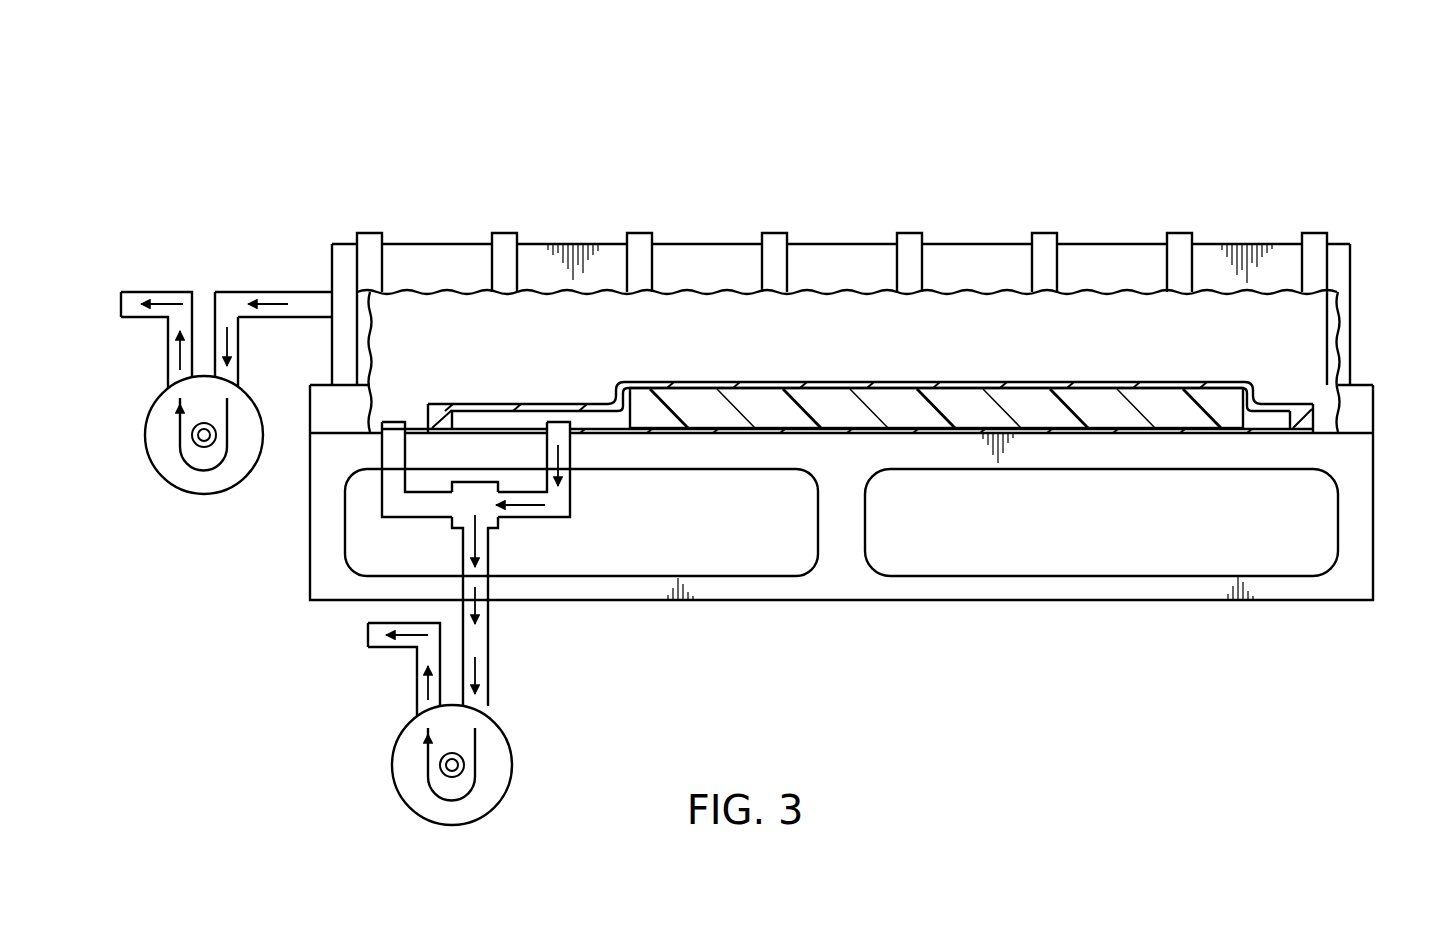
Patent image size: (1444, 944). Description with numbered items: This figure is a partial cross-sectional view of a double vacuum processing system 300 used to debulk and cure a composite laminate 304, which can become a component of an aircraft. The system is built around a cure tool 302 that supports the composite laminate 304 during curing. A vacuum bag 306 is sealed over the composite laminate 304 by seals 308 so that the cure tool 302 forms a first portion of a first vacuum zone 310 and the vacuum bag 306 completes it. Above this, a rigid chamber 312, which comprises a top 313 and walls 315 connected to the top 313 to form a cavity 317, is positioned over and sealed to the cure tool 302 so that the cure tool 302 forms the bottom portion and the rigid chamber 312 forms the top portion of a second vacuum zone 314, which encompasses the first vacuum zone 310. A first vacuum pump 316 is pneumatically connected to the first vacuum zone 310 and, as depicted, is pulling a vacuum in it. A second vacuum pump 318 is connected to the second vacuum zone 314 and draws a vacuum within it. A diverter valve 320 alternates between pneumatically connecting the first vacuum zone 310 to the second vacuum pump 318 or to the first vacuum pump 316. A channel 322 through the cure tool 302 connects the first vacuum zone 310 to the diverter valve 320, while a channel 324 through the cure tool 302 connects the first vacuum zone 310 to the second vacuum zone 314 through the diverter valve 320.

The double vacuum processing system 300 is at (436, 131).
The cure tool 302 is at (927, 606).
The composite laminate 304 is at (1033, 408).
The vacuum bag 306 is at (968, 382).
The seals 308 is at (430, 403).
The first vacuum zone 310 is at (606, 400).
The rigid chamber 312 is at (1104, 238).
The top 313 is at (830, 243).
The second vacuum zone 314 is at (732, 318).
The walls 315 is at (1350, 292).
The first vacuum pump 316 is at (362, 768).
The cavity 317 is at (842, 315).
The second vacuum pump 318 is at (140, 497).
The diverter valve 320 is at (498, 525).
The channel 322 is at (572, 492).
The channel 324 is at (375, 485).